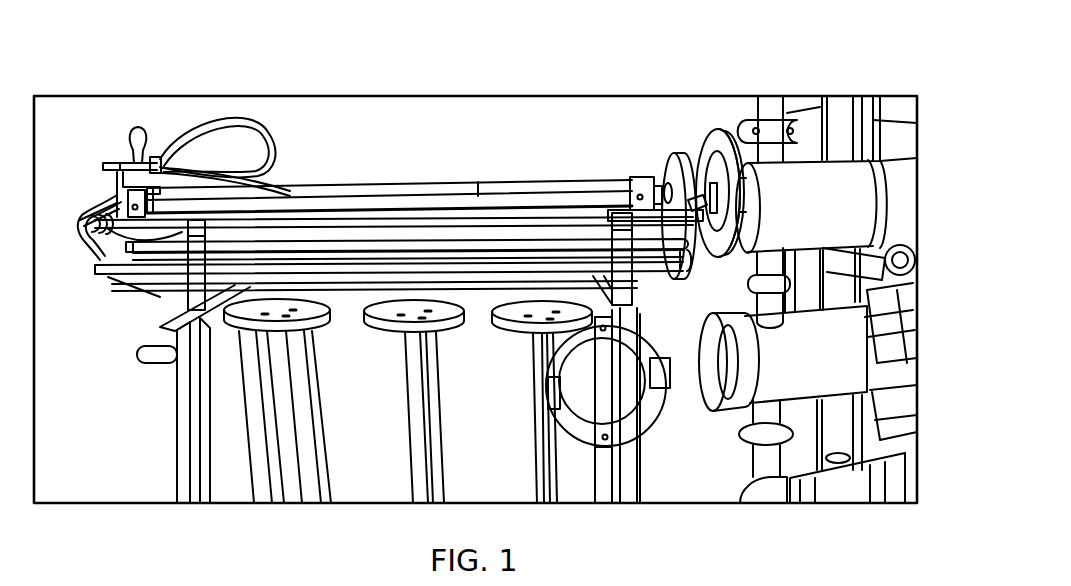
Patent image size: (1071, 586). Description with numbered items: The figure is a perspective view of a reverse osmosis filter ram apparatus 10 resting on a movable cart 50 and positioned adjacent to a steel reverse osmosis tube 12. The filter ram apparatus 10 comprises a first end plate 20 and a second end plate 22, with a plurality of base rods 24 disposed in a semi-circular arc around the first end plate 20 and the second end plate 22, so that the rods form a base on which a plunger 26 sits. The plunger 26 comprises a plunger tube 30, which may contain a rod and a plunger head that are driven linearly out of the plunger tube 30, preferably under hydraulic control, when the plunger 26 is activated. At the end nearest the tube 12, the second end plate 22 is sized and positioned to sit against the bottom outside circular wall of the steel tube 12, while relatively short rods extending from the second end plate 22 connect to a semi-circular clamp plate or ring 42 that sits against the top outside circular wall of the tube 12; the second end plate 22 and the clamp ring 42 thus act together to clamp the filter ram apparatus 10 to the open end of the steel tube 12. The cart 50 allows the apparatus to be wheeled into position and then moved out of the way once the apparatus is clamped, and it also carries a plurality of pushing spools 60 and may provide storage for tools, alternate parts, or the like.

The reverse osmosis filter ram apparatus 10 is at (166, 81).
The steel reverse osmosis tube 12 is at (842, 193).
The first end plate 20 is at (85, 240).
The second end plate 22 is at (702, 157).
The base rods 24 is at (177, 247).
The plunger 26 is at (428, 203).
The plunger tube 30 is at (527, 202).
The semi-circular clamp plate or ring 42 is at (718, 127).
The cart 50 is at (188, 452).
The pushing spools 60 is at (282, 382).